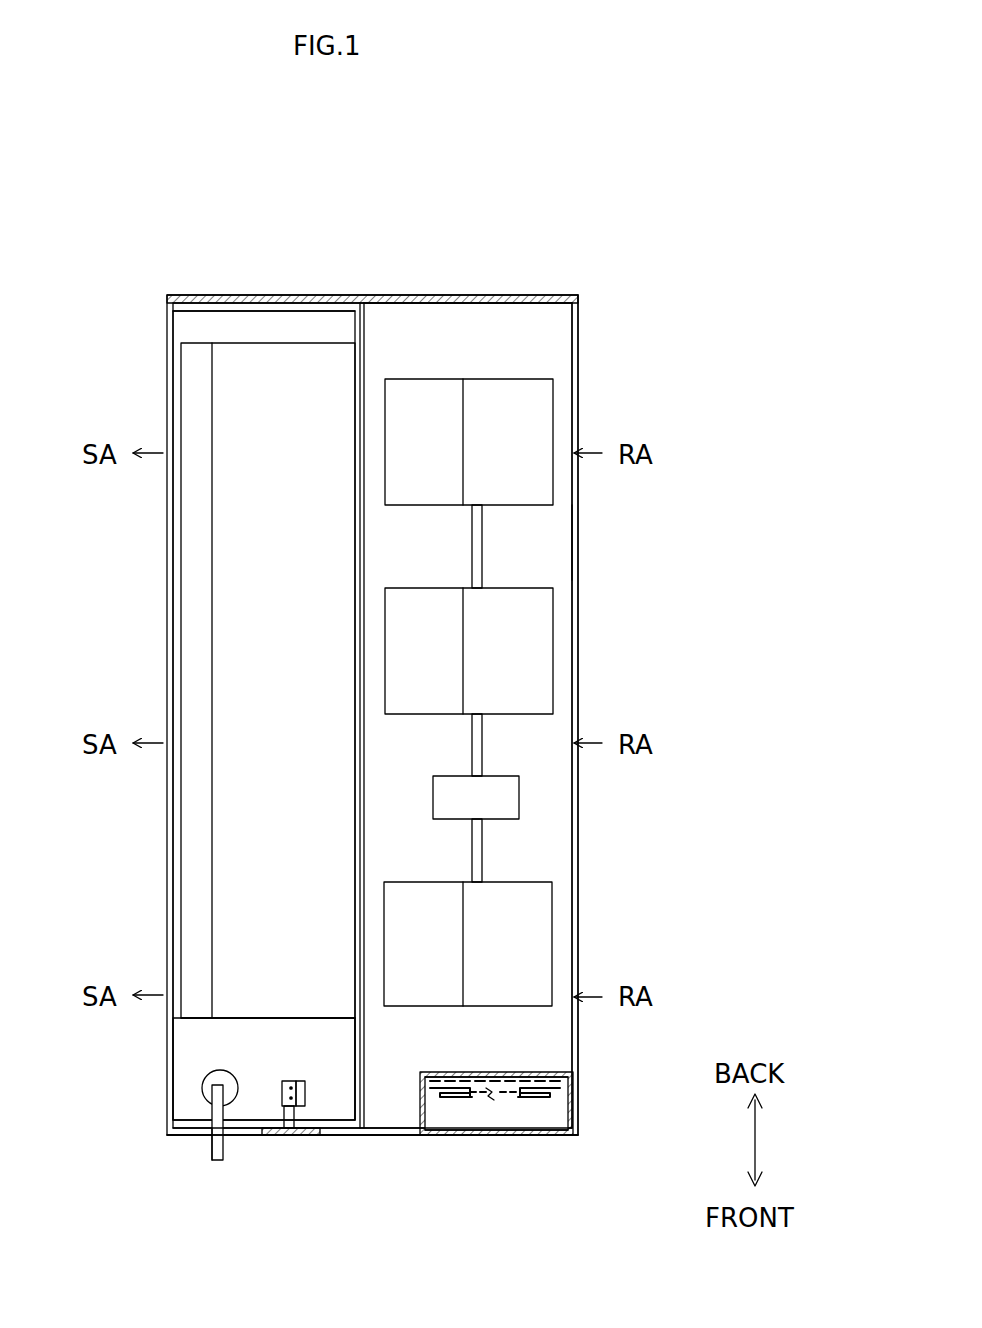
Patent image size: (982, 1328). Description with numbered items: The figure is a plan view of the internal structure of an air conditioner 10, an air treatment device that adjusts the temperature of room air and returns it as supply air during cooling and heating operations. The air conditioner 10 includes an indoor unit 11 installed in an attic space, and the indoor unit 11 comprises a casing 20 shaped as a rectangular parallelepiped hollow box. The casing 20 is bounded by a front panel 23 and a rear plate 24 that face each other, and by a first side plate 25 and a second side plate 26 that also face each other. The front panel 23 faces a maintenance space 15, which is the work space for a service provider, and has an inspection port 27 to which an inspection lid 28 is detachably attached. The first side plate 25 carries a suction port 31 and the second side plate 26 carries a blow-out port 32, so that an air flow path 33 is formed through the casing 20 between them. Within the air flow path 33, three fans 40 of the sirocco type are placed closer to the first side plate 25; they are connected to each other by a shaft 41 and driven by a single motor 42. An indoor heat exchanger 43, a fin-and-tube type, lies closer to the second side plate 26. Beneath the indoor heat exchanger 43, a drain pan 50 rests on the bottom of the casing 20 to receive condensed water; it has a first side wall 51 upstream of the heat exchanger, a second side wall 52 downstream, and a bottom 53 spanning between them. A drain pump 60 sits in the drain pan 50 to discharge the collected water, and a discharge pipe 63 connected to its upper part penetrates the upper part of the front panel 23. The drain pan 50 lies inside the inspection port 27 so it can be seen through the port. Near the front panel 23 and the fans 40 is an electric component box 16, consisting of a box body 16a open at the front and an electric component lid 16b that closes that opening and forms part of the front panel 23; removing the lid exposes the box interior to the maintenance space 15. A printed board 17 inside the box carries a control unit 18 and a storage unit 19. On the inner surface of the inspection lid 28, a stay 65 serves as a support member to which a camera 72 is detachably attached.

The air conditioner 10 is at (582, 156).
The indoor unit 11 is at (515, 266).
The maintenance space 15 is at (471, 1237).
The electric component box 16 is at (505, 1071).
The box body 16a is at (431, 1071).
The electric component lid 16b is at (512, 1137).
The printed board 17 is at (496, 1103).
The control unit 18 is at (458, 1098).
The storage unit 19 is at (554, 1098).
The casing 20 is at (254, 295).
The front panel 23 is at (400, 1136).
The rear plate 24 is at (391, 300).
The first side plate 25 is at (580, 338).
The second side plate 26 is at (165, 335).
The inspection port 27 is at (318, 1136).
The inspection lid 28 is at (289, 1136).
The suction port 31 is at (580, 538).
The blow-out port 32 is at (167, 541).
The air flow path 33 is at (445, 342).
The fan 40 is at (407, 379).
The shaft 41 is at (484, 558).
The motor 42 is at (432, 797).
The indoor heat exchanger 43 is at (215, 341).
The drain pan 50 is at (165, 1063).
The first side wall 51 is at (364, 1065).
The second side wall 52 is at (167, 1035).
The bottom 53 is at (243, 1108).
The drain pump 60 is at (216, 1070).
The discharge pipe 63 is at (210, 1150).
The stay 65 is at (286, 1081).
The camera 72 is at (303, 1081).